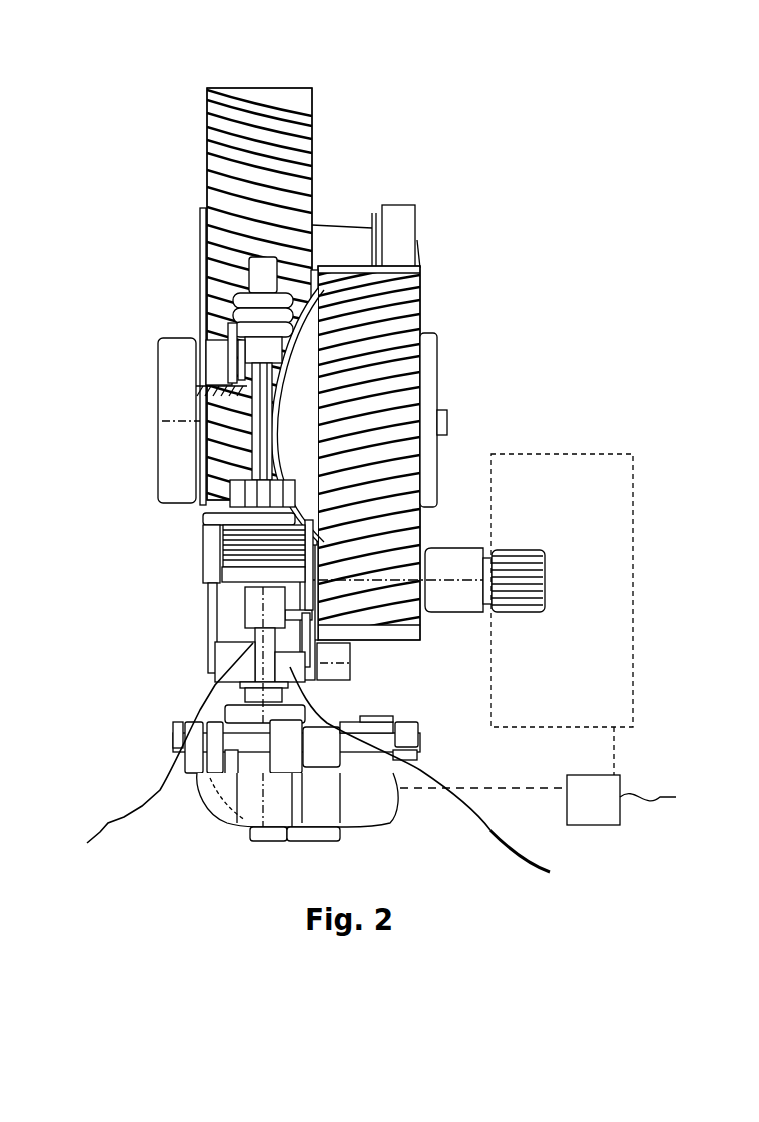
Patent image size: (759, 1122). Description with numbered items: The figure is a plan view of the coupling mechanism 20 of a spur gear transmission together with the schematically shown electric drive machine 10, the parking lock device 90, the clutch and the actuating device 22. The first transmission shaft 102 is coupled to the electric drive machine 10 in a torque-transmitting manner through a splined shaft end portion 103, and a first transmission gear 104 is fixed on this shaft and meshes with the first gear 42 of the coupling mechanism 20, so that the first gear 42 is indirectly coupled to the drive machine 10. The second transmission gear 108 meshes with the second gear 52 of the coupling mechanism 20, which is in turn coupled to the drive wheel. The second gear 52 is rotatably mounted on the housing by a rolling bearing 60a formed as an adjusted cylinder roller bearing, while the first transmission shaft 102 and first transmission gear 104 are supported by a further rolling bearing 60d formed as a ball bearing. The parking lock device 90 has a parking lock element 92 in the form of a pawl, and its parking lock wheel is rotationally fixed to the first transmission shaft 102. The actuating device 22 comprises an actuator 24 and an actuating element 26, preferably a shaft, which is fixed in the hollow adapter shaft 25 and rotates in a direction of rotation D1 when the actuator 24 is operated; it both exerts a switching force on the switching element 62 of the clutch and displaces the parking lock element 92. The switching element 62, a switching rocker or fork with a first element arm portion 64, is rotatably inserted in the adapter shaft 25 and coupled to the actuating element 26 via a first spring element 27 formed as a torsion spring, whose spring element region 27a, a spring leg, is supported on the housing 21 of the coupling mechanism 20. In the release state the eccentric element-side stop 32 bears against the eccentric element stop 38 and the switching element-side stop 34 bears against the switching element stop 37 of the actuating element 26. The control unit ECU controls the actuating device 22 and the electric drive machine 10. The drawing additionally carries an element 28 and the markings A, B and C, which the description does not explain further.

The electric drive machine 10 is at (612, 454).
The coupling mechanism 20 is at (434, 291).
The housing 21 is at (218, 380).
The actuating device 22 is at (258, 850).
The actuator 24 is at (358, 822).
The adapter shaft 25 is at (305, 500).
The actuating element 26 is at (150, 759).
The first spring element 27 is at (423, 335).
The spring element region 27a is at (218, 352).
The bearing 28 is at (330, 540).
The eccentric element-side stop 32 is at (213, 583).
The switching element-side stop 34 is at (255, 512).
The switching element stop 37 is at (200, 517).
The eccentric element stop 38 is at (213, 573).
The first gear 42 is at (420, 283).
The second gear 52 is at (190, 438).
The rolling bearing 60a is at (173, 453).
The rolling bearing 60d is at (220, 645).
The switching element 62 is at (240, 295).
The first element arm portion 64 is at (302, 305).
The parking lock device 90 is at (213, 676).
The parking lock element 92 is at (440, 778).
The first transmission shaft 102 is at (440, 597).
The splined shaft end portion 103 is at (513, 615).
The first transmission gear 104 is at (377, 622).
The second transmission gear 108 is at (307, 235).
The axis A is at (174, 420).
The axis B is at (490, 555).
The spring C is at (262, 283).
The direction of rotation D1 is at (290, 252).
The control unit ECU is at (655, 800).